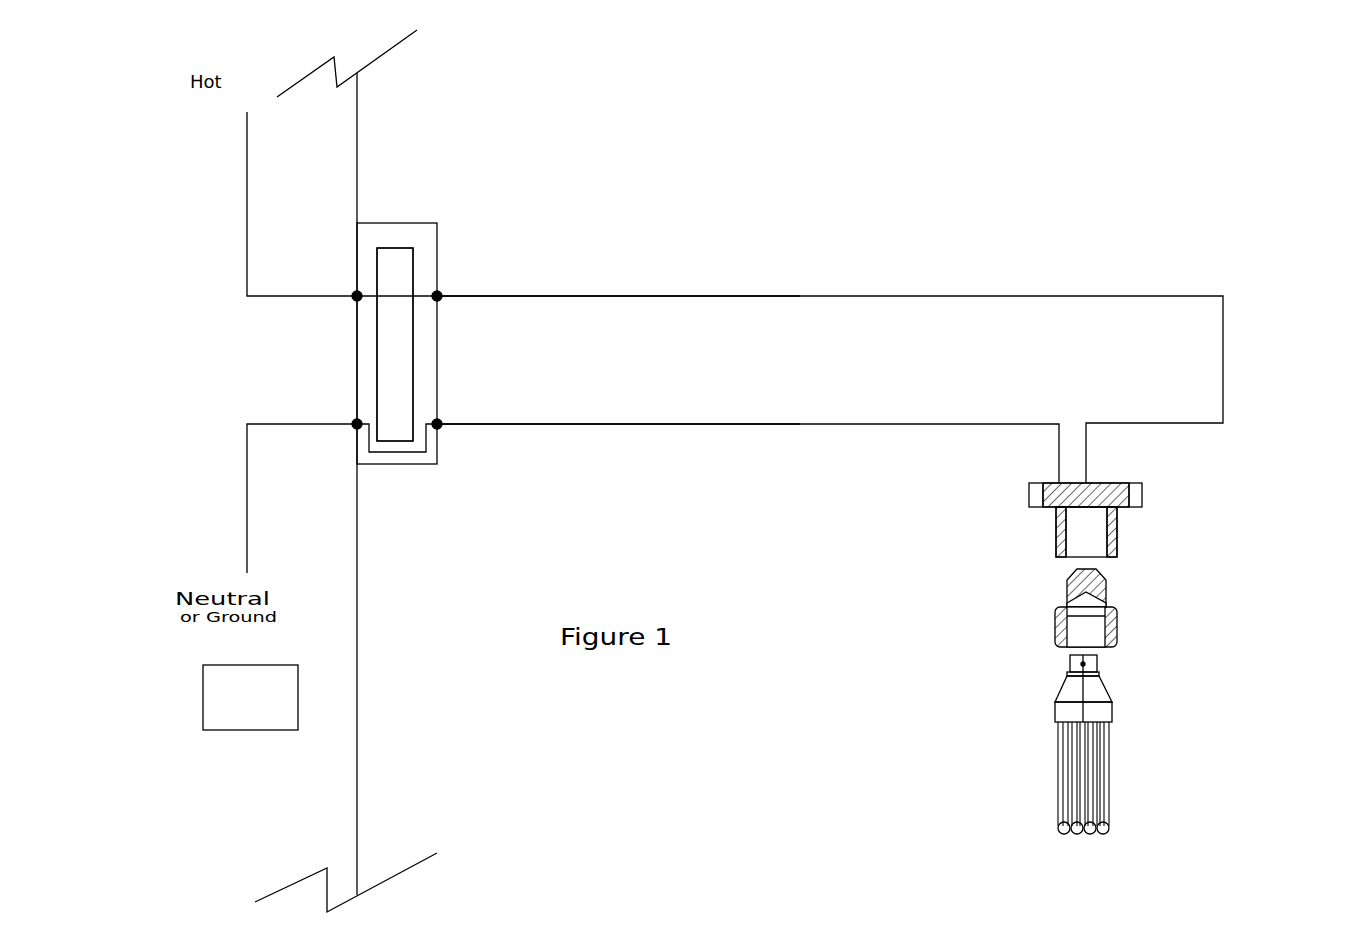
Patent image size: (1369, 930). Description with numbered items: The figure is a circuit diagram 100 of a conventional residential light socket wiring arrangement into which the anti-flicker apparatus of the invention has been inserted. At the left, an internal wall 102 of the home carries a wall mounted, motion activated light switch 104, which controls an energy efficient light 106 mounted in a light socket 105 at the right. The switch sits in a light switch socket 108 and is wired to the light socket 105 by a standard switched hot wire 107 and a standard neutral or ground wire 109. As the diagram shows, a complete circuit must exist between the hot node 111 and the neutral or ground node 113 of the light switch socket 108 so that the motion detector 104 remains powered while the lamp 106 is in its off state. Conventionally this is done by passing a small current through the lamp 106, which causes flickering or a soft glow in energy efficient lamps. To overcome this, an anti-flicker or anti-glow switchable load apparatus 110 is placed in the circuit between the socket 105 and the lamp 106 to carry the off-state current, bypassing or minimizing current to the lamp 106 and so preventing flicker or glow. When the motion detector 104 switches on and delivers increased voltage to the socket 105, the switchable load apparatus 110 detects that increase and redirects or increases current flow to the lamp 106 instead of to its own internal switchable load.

The circuit diagram 100 is at (1048, 175).
The internal wall 102 is at (228, 732).
The motion activated light switch 104 is at (530, 397).
The light socket 105 is at (1128, 518).
The energy efficient light 106 is at (1047, 762).
The switched hot wire 107 is at (797, 296).
The light switch socket 108 is at (400, 240).
The neutral wire 109 is at (872, 424).
The anti-flicker or anti-glow switchable load apparatus 110 is at (1113, 597).
The hot node 111 is at (541, 290).
The neutral node 113 is at (549, 420).